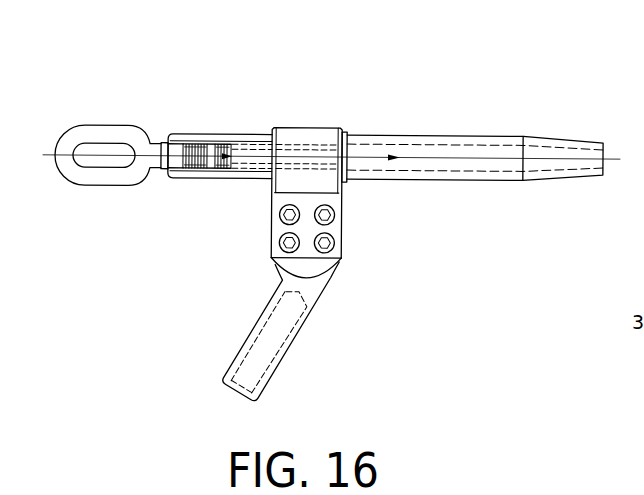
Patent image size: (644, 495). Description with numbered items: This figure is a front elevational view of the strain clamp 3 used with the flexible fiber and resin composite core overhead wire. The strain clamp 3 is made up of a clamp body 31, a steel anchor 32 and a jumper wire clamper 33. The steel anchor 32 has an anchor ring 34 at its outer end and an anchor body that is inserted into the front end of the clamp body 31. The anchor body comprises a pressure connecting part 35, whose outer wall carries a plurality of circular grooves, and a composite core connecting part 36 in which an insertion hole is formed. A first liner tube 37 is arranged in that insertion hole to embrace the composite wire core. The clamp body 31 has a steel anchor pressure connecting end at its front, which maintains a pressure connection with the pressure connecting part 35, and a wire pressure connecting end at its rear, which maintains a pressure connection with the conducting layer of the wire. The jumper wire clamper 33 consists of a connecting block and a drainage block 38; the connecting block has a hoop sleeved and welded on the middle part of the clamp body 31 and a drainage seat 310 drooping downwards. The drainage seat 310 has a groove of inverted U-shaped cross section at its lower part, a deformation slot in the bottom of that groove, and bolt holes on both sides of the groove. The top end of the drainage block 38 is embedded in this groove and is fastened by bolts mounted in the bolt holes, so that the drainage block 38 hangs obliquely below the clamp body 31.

The strain clamp 3 is at (330, 233).
The clamp body 31 is at (475, 136).
The steel anchor 32 is at (180, 201).
The jumper wire clamper 33 is at (346, 256).
The anchor ring 34 is at (104, 179).
The pressure connecting part 35 is at (203, 188).
The composite core connecting part 36 is at (279, 188).
The first liner tube 37 is at (258, 170).
The drainage block 38 is at (296, 331).
The drainage seat 310 is at (349, 227).